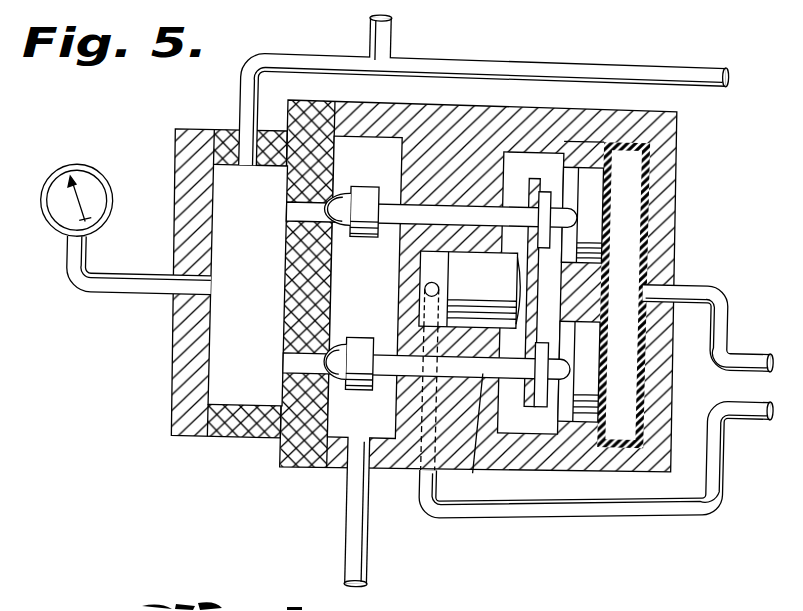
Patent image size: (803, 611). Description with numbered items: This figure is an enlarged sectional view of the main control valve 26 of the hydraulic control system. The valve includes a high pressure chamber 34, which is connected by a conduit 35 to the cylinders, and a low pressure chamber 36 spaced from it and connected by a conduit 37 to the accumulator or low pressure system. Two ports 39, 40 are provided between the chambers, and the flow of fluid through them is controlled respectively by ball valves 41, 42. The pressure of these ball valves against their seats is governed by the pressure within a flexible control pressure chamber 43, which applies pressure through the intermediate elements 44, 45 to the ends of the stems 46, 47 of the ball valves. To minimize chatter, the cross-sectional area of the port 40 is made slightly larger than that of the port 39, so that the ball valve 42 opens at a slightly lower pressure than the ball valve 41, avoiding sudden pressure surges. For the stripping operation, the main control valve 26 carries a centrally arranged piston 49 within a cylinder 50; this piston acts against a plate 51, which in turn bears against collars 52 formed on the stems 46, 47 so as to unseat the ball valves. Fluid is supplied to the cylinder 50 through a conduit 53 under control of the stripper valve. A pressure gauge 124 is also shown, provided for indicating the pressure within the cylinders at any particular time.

The gauge 124 is at (82, 180).
The main control valve 26 is at (177, 341).
The high pressure chamber 34 is at (263, 297).
The conduit 35 is at (240, 100).
The low pressure chamber 36 is at (381, 419).
The conduit 37 is at (359, 514).
The port 39 is at (292, 207).
The port 40 is at (296, 368).
The ball valve 41 is at (350, 188).
The ball valve 42 is at (345, 344).
The flexible control pressure chamber 43 is at (639, 244).
The element 44 is at (593, 184).
The element 45 is at (589, 361).
The stem 46 is at (446, 201).
The stem 47 is at (481, 438).
The piston 49 is at (503, 282).
The cylinder 50 is at (422, 262).
The plate 51 is at (580, 236).
The collars 52 is at (531, 293).
The conduit 53 is at (614, 511).